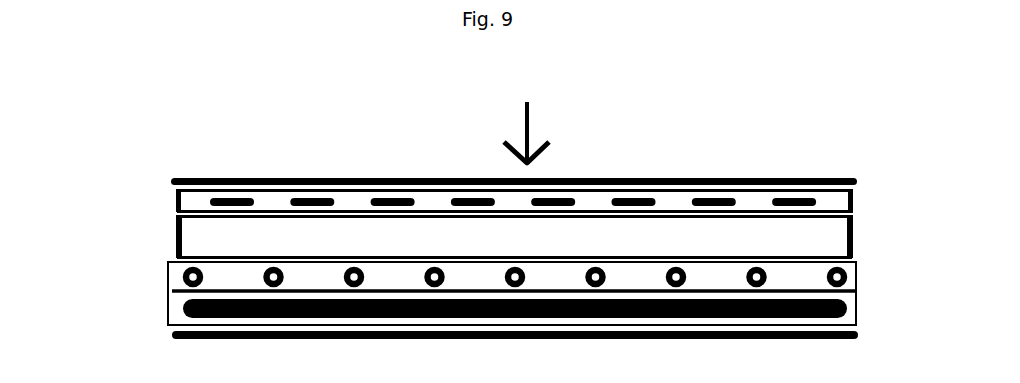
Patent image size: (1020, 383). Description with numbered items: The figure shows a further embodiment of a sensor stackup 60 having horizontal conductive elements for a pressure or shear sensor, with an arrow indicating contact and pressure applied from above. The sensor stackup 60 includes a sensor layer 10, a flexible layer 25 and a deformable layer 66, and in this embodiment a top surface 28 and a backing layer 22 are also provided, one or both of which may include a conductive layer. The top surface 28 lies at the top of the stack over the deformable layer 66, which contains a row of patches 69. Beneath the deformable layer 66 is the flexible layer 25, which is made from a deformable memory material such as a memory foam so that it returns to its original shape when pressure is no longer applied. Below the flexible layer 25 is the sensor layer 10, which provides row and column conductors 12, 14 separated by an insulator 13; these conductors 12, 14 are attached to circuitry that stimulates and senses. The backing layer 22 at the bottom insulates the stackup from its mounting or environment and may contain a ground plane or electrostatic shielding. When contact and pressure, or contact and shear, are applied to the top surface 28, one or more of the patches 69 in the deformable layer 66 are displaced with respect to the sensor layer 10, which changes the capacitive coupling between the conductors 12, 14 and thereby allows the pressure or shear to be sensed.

The sensor layer 10 is at (855, 302).
The conductors 12 is at (183, 272).
The insulator 13 is at (177, 290).
The conductors 14 is at (180, 310).
The backing layer 22 is at (857, 333).
The flexible layer 25 is at (853, 235).
The top surface 28 is at (837, 178).
The sensor stackup 60 is at (526, 117).
The deformable layer 66 is at (853, 203).
The patches 69 is at (210, 202).